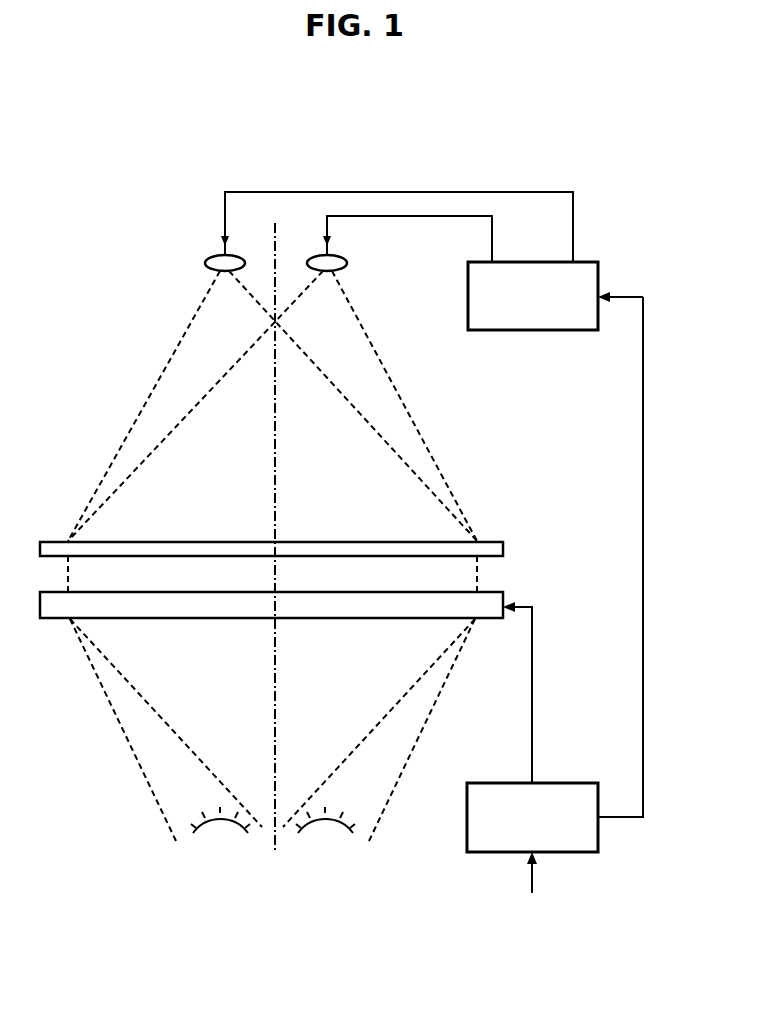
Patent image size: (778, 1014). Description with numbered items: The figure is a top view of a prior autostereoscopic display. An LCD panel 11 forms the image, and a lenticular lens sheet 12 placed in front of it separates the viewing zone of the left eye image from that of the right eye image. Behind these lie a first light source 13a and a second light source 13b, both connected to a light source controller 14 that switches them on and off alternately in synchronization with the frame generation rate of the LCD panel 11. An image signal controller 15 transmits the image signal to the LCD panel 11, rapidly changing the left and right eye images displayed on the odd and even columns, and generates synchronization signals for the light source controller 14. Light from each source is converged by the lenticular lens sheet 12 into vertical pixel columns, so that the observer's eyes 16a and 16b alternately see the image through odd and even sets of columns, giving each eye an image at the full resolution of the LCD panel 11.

The LCD panel 11 is at (488, 605).
The lenticular lens sheet 12 is at (488, 552).
The first light source 13a is at (215, 256).
The second light source 13b is at (345, 270).
The light source controller 14 is at (555, 296).
The image signal controller 15 is at (532, 838).
The observer's eye 16a is at (220, 832).
The observer's eye 16b is at (325, 832).